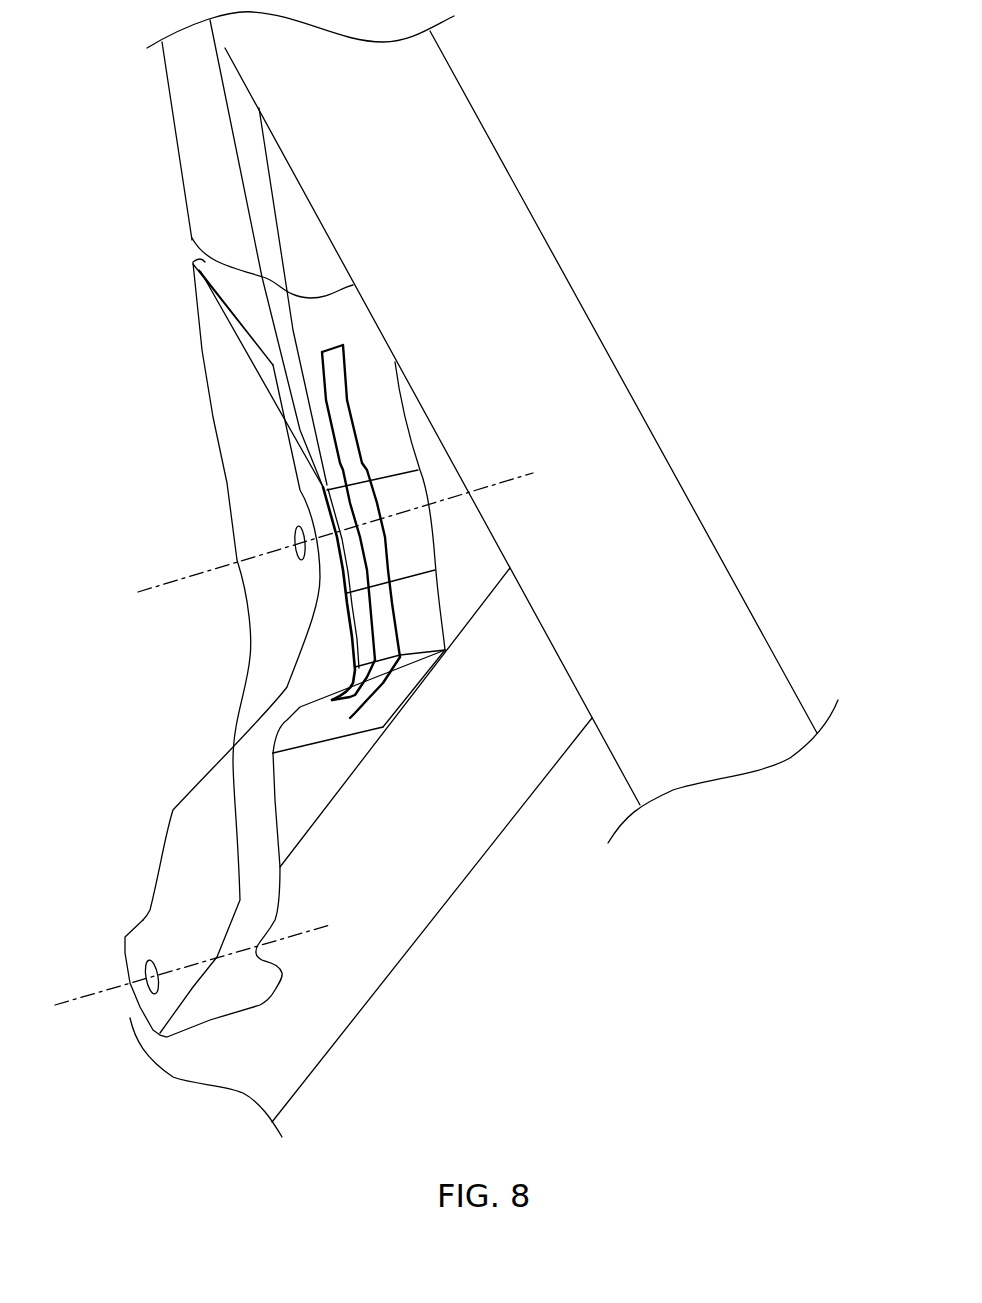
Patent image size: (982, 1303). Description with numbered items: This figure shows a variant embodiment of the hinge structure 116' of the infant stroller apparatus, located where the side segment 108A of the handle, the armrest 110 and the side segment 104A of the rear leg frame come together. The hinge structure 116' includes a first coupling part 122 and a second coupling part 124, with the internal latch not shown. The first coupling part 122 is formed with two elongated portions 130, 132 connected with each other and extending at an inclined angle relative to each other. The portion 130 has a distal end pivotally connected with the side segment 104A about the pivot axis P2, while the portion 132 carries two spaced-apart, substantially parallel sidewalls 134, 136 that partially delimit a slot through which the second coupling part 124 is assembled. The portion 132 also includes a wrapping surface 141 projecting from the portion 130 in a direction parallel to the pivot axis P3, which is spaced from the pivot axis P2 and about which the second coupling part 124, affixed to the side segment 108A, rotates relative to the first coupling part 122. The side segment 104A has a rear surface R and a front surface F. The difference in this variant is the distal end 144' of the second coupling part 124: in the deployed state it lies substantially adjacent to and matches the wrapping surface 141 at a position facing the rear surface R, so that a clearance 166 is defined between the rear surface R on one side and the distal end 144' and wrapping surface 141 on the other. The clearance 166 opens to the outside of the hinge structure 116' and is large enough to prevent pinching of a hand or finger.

The side segment of the handle 108A is at (176, 84).
The armrest 110 is at (672, 508).
The first coupling part 122 is at (163, 802).
The elongated portion 132 is at (217, 362).
The sidewall 134 is at (280, 410).
The elongated portion 130 is at (145, 928).
The hinge structure 116' is at (80, 510).
The pivot axis P3 is at (172, 582).
The pivot axis P2 is at (92, 998).
The second coupling part 124 is at (410, 493).
The sidewall 136 is at (333, 377).
The wrapping surface 141 is at (318, 730).
The distal end of the second coupling part 144' is at (493, 791).
The clearance 166 is at (360, 757).
The rear surface R is at (327, 793).
The side segment of the rear leg frame 104A is at (313, 1040).
The front surface F is at (492, 848).